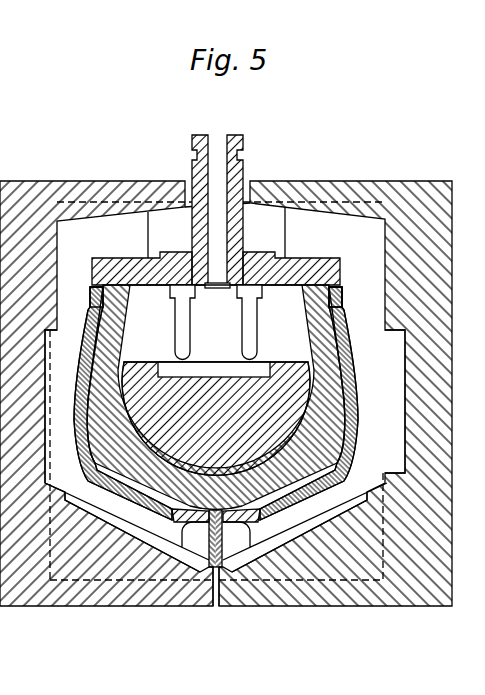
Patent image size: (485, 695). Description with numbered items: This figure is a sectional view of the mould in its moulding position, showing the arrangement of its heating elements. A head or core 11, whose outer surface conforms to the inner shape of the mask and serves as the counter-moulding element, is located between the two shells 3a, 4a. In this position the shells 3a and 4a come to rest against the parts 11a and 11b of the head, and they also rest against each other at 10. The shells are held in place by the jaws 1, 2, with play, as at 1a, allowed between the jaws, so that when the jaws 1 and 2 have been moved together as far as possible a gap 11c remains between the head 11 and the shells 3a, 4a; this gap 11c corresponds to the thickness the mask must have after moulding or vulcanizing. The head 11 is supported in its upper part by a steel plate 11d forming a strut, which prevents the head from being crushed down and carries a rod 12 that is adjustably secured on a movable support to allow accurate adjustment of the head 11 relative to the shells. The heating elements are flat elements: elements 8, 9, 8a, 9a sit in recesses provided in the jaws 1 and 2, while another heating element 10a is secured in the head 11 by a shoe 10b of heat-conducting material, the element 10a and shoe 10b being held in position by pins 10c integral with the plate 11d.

The jaw 1 is at (30, 198).
The play between the jaws 1a is at (218, 605).
The jaw 2 is at (428, 260).
The shell 3a is at (127, 220).
The shell 4a is at (310, 220).
The heating element 8 is at (45, 459).
The heating element 8a is at (397, 457).
The heating element 9 is at (127, 540).
The heating element 9a is at (297, 543).
The contact point of the shells 10 is at (207, 553).
The heating element 10a is at (207, 370).
The shoe 10b is at (193, 390).
The pins 10c is at (178, 310).
The head or core 11 is at (332, 348).
The part of the head 11a is at (100, 303).
The part of the head 11b is at (339, 292).
The gap 11c is at (95, 373).
The steel plate 11d is at (255, 258).
The rod 12 is at (245, 160).